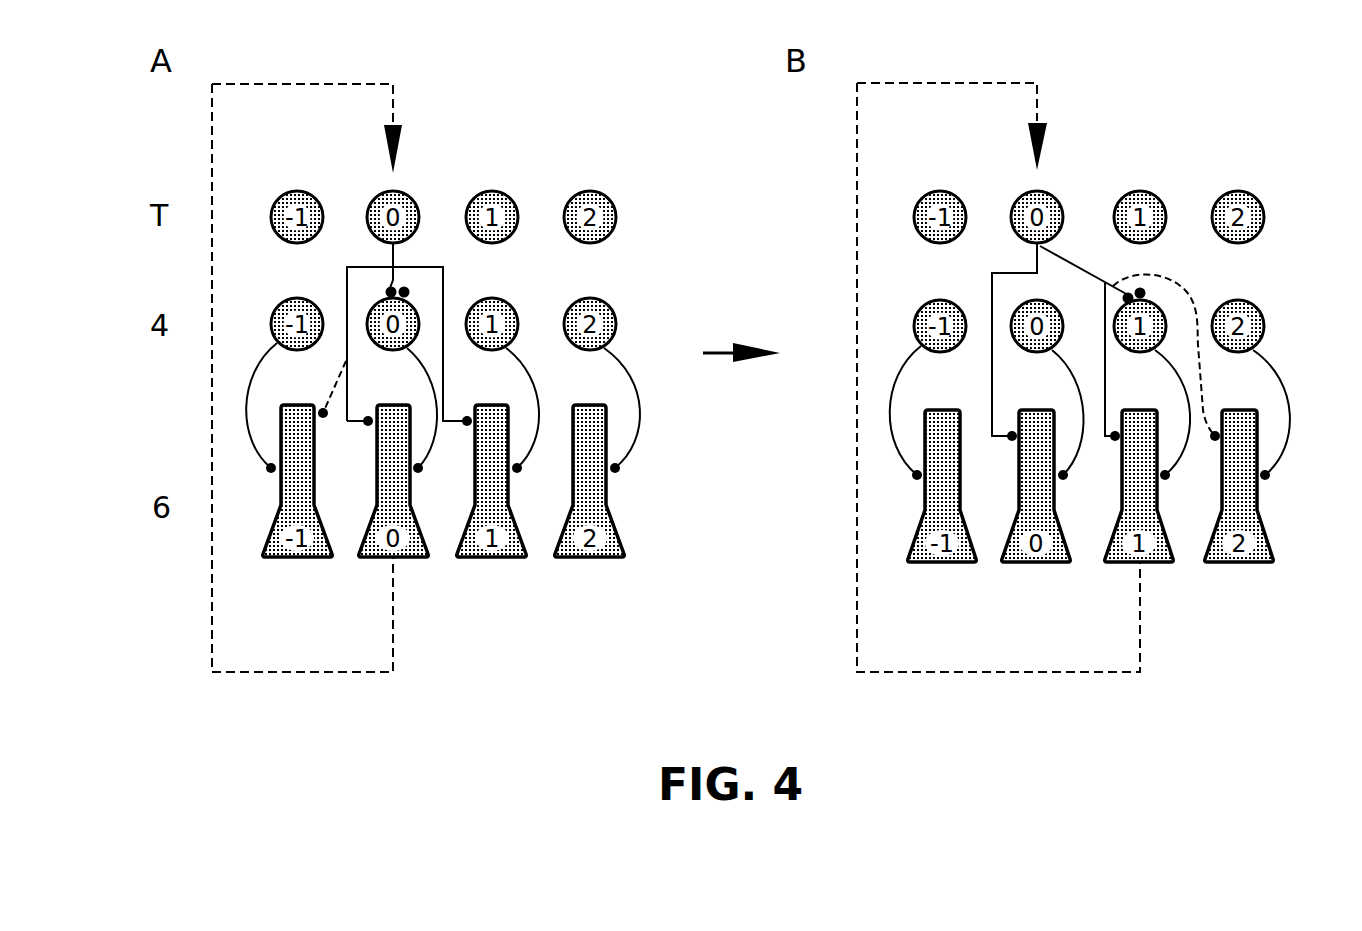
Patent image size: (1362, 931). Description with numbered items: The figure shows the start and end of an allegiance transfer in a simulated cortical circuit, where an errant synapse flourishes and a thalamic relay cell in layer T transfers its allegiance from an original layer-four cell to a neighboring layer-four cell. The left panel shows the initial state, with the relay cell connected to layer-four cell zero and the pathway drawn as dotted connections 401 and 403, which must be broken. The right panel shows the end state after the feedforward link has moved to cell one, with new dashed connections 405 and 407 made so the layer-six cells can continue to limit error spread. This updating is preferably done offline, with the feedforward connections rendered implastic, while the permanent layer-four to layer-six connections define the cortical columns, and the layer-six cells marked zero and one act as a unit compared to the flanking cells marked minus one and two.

The dotted connection 401 is at (337, 383).
The dotted connection 403 is at (302, 673).
The dashed connection 405 is at (1183, 291).
The dashed connection 407 is at (1008, 672).